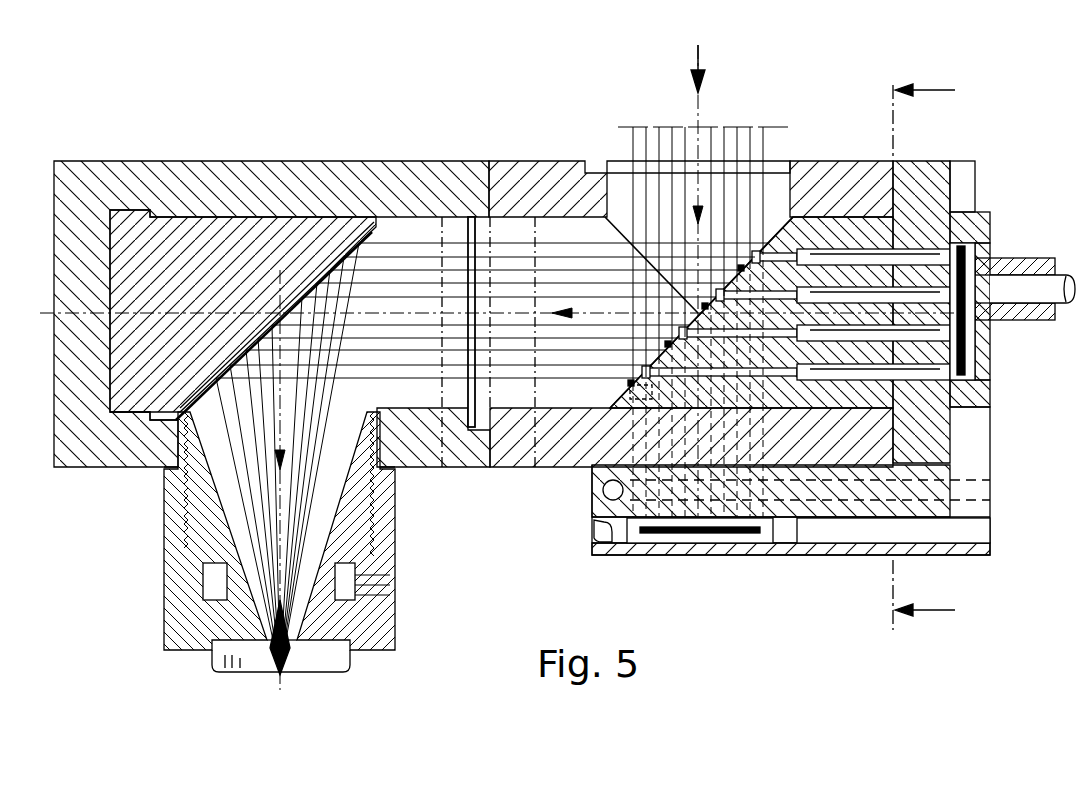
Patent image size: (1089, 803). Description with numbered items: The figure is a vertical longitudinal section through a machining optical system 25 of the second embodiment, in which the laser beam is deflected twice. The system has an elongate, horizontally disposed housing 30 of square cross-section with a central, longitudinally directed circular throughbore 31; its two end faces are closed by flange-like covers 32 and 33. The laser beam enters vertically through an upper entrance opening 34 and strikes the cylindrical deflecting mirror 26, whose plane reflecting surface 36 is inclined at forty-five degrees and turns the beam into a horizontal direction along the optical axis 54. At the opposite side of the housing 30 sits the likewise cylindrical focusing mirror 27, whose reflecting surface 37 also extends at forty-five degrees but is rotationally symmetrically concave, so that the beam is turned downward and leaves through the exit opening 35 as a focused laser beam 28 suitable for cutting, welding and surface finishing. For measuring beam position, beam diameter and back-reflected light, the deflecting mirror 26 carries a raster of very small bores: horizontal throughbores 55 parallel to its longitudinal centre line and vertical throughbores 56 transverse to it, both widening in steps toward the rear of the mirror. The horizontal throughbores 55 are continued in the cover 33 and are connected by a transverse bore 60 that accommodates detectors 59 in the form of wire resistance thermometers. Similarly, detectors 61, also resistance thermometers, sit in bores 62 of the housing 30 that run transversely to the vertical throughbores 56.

The machining optical system 25 is at (332, 142).
The deflecting mirror 26 is at (814, 213).
The focusing mirror 27 is at (163, 238).
The focused laser beam 28 is at (287, 514).
The housing 30 is at (520, 186).
The throughbore 31 is at (578, 222).
The cover 32 is at (76, 178).
The cover 33 is at (919, 183).
The entrance opening 34 is at (616, 186).
The exit opening 35 is at (178, 425).
The plane reflecting surface 36 is at (790, 222).
The reflecting surface 37 is at (252, 352).
The optical axis 54 is at (373, 318).
The throughbores 55 is at (824, 290).
The throughbores 56 is at (630, 393).
The detectors 59 is at (966, 345).
The bore 60 is at (972, 248).
The detectors 61 is at (683, 534).
The bores 62 is at (645, 541).